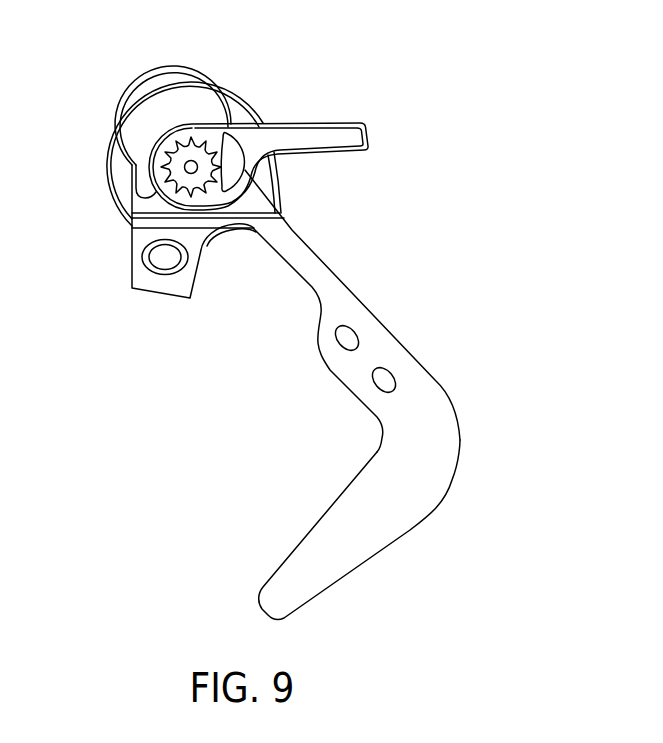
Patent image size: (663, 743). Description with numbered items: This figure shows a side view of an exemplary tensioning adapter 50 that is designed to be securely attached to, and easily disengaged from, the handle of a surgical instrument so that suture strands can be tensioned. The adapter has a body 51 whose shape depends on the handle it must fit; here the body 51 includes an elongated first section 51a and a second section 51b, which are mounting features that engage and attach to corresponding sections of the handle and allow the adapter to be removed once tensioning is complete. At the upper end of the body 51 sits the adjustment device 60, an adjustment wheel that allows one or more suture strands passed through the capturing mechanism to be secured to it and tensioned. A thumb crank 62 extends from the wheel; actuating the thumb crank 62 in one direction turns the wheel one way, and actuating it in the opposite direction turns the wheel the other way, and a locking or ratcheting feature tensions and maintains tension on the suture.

The tensioning adapter 50 is at (302, 342).
The body 51 is at (398, 362).
The first section 51a is at (408, 503).
The second section 51b is at (134, 258).
The adjustment device 60 is at (186, 131).
The thumb crank 62 is at (186, 131).